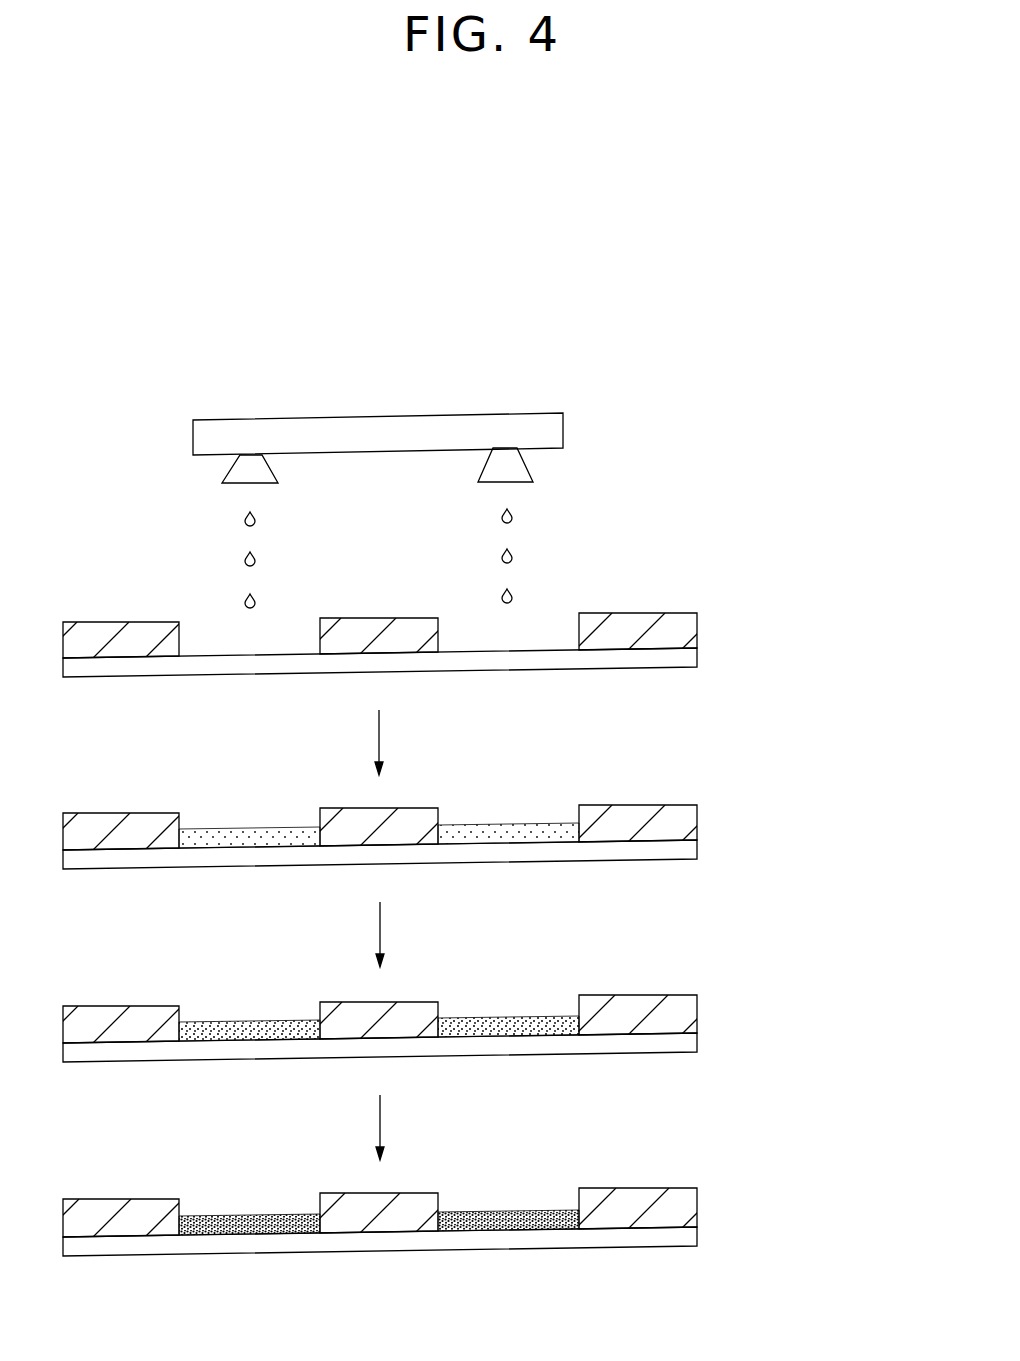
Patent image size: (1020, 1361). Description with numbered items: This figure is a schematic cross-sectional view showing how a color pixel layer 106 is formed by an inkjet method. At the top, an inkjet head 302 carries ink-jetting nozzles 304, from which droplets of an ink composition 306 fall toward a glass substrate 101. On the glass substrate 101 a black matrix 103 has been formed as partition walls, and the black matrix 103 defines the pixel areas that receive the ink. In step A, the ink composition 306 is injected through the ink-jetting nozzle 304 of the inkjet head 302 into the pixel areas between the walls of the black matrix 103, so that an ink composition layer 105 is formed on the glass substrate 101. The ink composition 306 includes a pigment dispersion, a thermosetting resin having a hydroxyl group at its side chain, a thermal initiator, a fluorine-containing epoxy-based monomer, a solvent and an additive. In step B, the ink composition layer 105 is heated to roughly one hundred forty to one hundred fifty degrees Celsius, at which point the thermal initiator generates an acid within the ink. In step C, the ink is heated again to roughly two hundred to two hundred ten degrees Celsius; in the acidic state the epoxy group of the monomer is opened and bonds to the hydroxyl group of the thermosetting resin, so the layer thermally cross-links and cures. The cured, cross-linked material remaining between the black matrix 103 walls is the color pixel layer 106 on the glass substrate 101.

The inkjet head 302 is at (370, 428).
The ink-jetting nozzle 304 is at (520, 466).
The ink composition 306 is at (512, 515).
The glass substrate 101 is at (682, 656).
The black matrix 103 is at (657, 628).
The ink composition layer 105 is at (516, 830).
The color pixel layer 106 is at (512, 1210).
The step A is at (460, 706).
The step B is at (726, 964).
The step C is at (429, 1164).